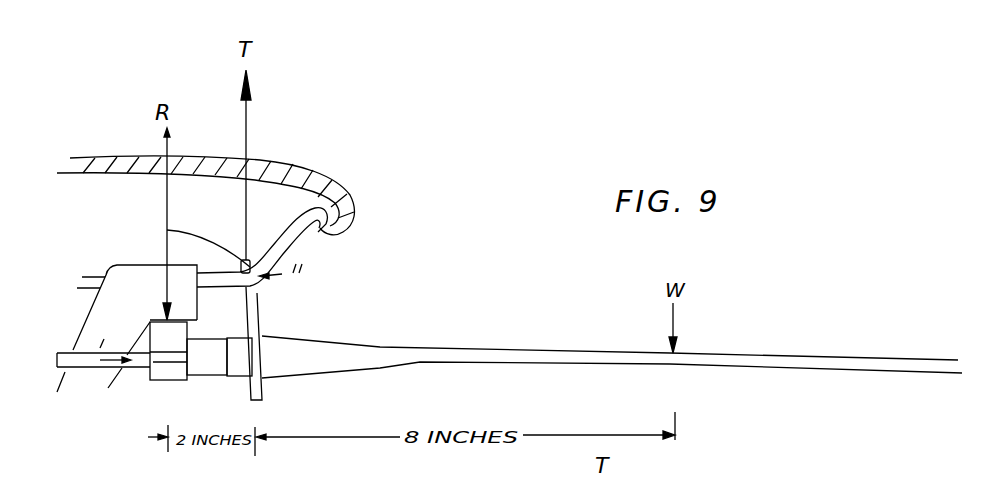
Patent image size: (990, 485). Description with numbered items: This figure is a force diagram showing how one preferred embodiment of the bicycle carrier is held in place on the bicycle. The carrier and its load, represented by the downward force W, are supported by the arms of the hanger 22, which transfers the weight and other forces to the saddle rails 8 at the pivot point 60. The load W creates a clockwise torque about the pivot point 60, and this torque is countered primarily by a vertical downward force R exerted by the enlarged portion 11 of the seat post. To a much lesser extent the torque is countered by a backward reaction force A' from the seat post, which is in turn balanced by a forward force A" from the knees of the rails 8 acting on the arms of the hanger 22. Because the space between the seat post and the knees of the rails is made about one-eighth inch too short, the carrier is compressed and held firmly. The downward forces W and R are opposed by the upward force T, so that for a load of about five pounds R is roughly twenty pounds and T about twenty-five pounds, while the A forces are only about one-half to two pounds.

The saddle rails 8 is at (297, 243).
The enlarged portion of seat post 11 is at (196, 306).
The hanger 22 is at (263, 313).
The pivot point 60 is at (167, 230).